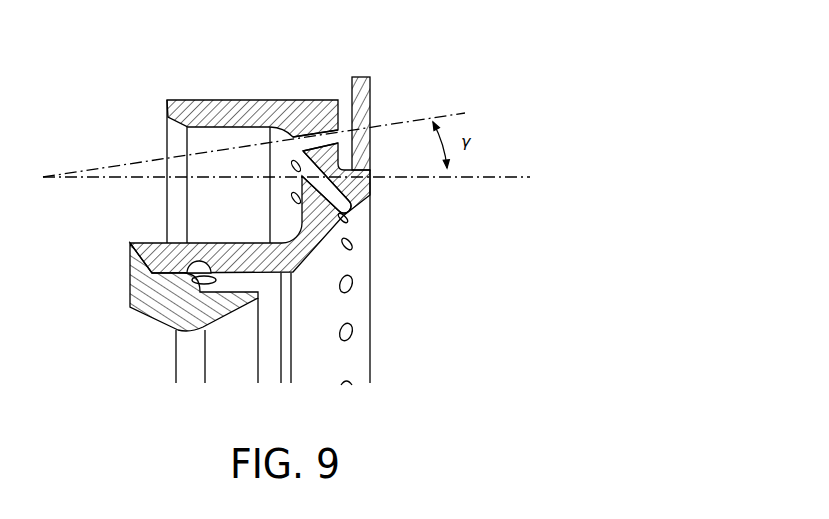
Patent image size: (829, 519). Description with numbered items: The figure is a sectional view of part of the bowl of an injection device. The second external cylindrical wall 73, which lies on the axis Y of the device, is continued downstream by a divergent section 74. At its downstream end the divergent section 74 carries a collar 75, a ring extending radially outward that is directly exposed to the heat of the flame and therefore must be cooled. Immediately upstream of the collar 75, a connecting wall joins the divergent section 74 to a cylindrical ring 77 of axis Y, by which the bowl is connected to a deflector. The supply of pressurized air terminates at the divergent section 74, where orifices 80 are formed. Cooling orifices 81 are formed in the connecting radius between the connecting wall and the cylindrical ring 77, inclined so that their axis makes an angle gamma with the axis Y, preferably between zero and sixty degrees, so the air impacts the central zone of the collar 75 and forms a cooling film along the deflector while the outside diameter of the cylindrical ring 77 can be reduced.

The second external cylindrical wall 73 is at (167, 242).
The divergent section 74 is at (317, 213).
The collar 75 is at (370, 95).
The cylindrical ring 77 is at (238, 100).
The orifices 80 is at (341, 200).
The cooling orifices 81 is at (322, 138).